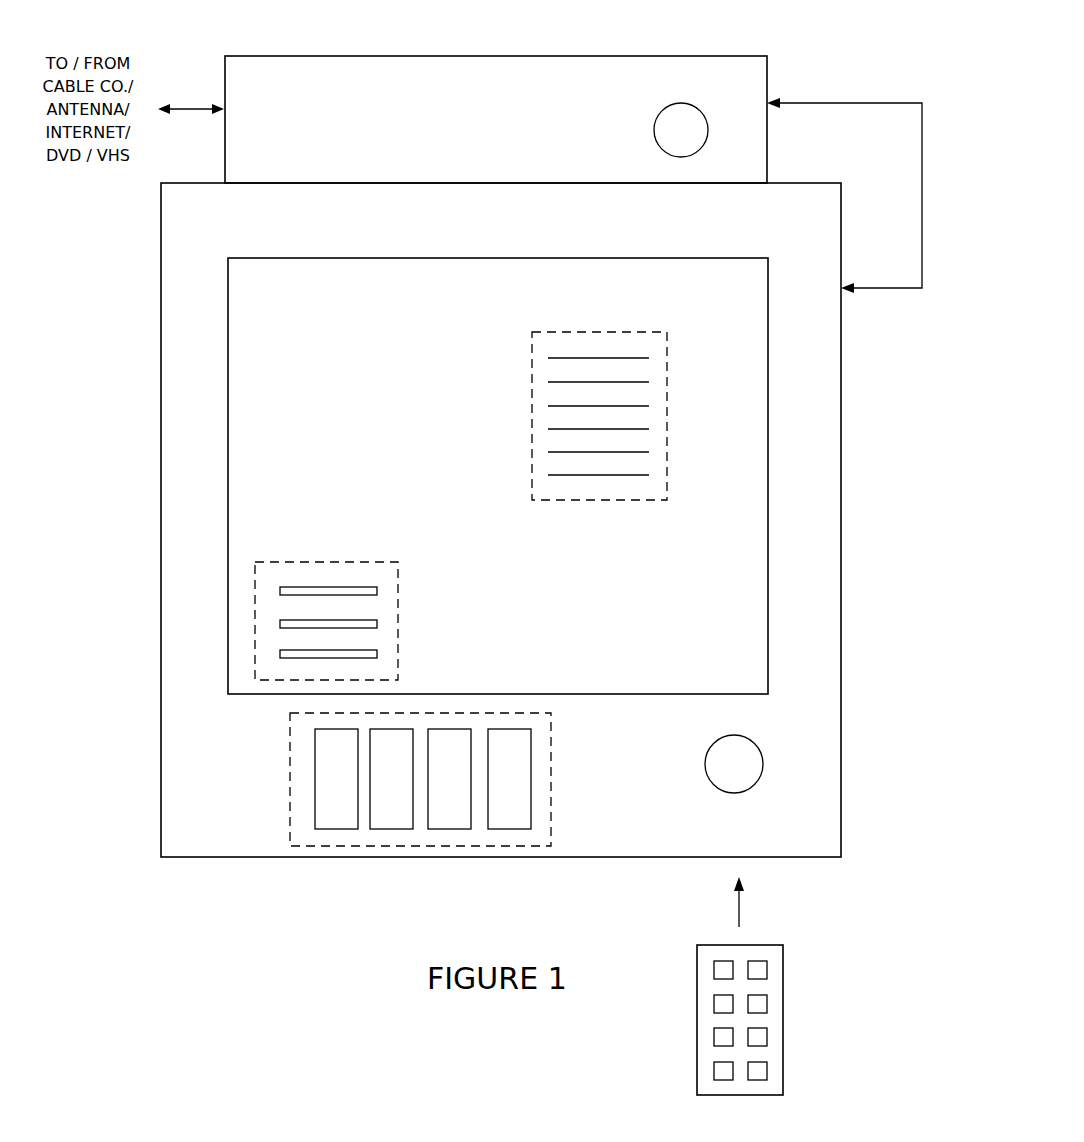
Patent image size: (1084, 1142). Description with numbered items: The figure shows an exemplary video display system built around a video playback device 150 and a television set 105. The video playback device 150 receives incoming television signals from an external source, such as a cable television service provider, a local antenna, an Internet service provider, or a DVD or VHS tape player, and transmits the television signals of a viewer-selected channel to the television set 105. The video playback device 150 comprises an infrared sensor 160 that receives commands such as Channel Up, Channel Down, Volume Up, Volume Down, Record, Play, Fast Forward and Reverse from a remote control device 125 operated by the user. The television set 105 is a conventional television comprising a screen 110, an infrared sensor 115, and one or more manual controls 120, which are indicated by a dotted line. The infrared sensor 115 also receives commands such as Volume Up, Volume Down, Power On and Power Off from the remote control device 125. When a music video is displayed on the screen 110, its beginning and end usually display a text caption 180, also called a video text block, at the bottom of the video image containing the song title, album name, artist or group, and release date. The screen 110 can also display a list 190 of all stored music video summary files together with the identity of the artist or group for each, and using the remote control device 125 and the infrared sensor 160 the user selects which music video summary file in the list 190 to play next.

The television set 105 is at (161, 362).
The screen 110 is at (228, 478).
The infrared (IR) sensor 115 is at (705, 764).
The manual controls 120 is at (290, 772).
The remote control device 125 is at (783, 992).
The video playback device 150 is at (267, 57).
The infrared (IR) sensor 160 is at (681, 103).
The text caption 180 is at (318, 562).
The list 190 is at (598, 332).